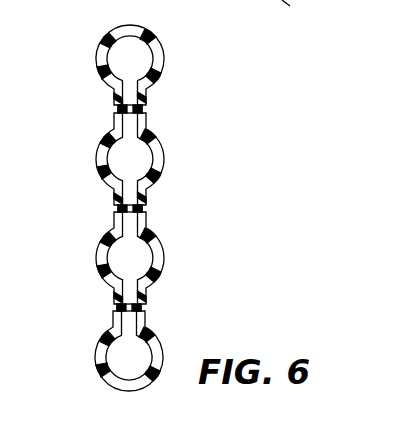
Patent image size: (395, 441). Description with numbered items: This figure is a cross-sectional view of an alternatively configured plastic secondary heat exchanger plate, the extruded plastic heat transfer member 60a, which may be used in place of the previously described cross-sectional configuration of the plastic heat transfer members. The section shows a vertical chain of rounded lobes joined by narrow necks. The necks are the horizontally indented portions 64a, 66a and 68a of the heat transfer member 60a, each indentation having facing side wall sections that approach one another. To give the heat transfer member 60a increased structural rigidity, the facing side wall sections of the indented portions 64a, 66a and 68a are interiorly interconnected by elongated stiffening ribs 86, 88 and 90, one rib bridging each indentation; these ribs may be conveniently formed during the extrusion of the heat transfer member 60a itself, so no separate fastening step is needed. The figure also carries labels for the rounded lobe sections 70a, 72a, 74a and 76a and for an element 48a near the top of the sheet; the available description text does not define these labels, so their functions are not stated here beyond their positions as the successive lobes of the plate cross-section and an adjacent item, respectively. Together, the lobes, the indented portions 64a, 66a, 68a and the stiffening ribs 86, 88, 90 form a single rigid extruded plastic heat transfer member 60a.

The heat transfer member 60a is at (140, 195).
The cable 48a is at (305, 16).
The first ring 70a is at (164, 70).
The second ring 72a is at (164, 160).
The third ring 74a is at (164, 265).
The fourth ring 76a is at (163, 355).
The horizontally indented portion 64a is at (115, 95).
The horizontally indented portion 66a is at (115, 200).
The horizontally indented portion 68a is at (114, 295).
The elongated stiffening rib 86 is at (146, 111).
The elongated stiffening rib 88 is at (146, 210).
The elongated stiffening rib 90 is at (146, 309).